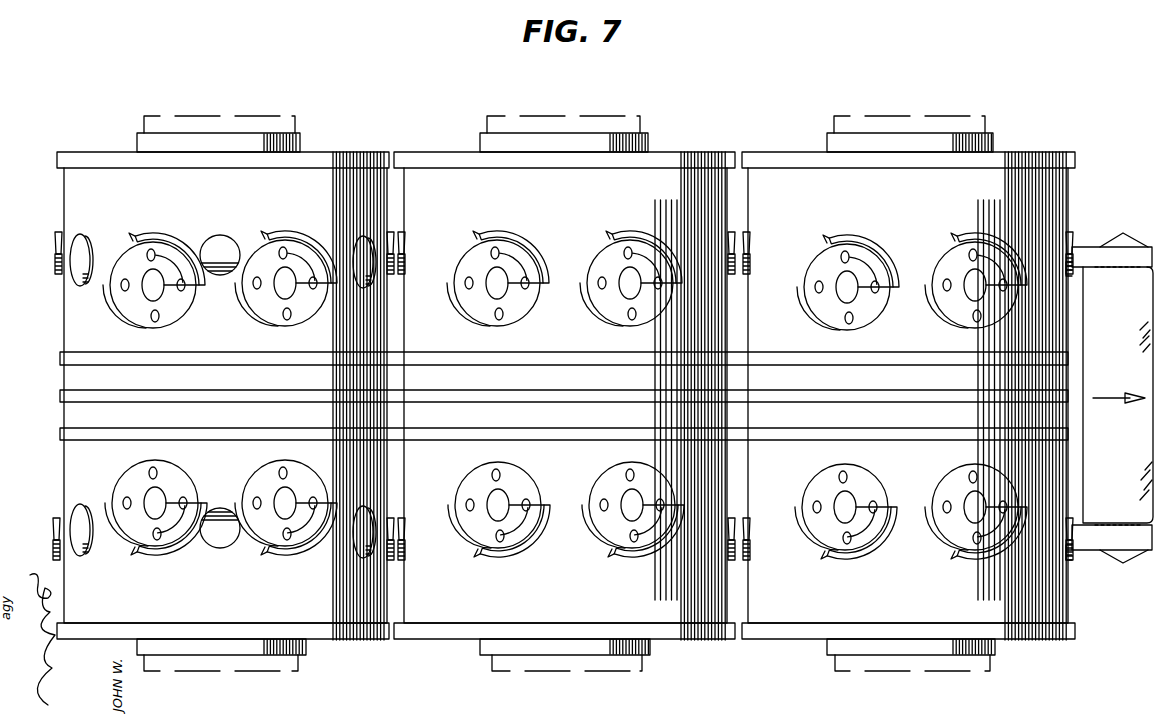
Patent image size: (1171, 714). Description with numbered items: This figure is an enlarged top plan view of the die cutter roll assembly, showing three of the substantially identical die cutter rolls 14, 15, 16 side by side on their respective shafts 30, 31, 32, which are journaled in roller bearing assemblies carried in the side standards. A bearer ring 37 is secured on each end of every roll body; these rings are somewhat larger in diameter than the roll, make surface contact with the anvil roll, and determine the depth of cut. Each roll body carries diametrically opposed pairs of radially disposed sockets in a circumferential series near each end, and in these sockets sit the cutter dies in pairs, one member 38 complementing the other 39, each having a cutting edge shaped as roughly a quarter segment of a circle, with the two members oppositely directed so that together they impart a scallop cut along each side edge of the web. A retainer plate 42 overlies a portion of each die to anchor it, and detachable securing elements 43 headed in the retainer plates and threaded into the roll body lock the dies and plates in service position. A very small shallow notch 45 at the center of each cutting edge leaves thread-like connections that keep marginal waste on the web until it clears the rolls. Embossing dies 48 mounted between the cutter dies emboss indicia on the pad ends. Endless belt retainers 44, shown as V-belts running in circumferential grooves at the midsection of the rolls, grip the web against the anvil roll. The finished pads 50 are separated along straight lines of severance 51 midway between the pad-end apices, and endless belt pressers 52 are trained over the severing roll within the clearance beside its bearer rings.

The die cutter roll 14 is at (300, 185).
The die cutter roll 15 is at (645, 178).
The die cutter roll 16 is at (990, 180).
The shaft 30 is at (240, 116).
The shaft 31 is at (566, 120).
The shaft 32 is at (890, 122).
The bearer ring 37 is at (83, 152).
The die member 38 is at (148, 236).
The die member 39 is at (298, 238).
The retainer plate 42 is at (140, 315).
The securing element 43 is at (128, 280).
The endless belt retainer 44 is at (265, 364).
The notch 45 is at (58, 245).
The embossing die 48 is at (225, 240).
The pad 50 is at (1084, 326).
The straight line of severance 51 is at (1084, 364).
The endless belt presser 52 is at (1093, 248).